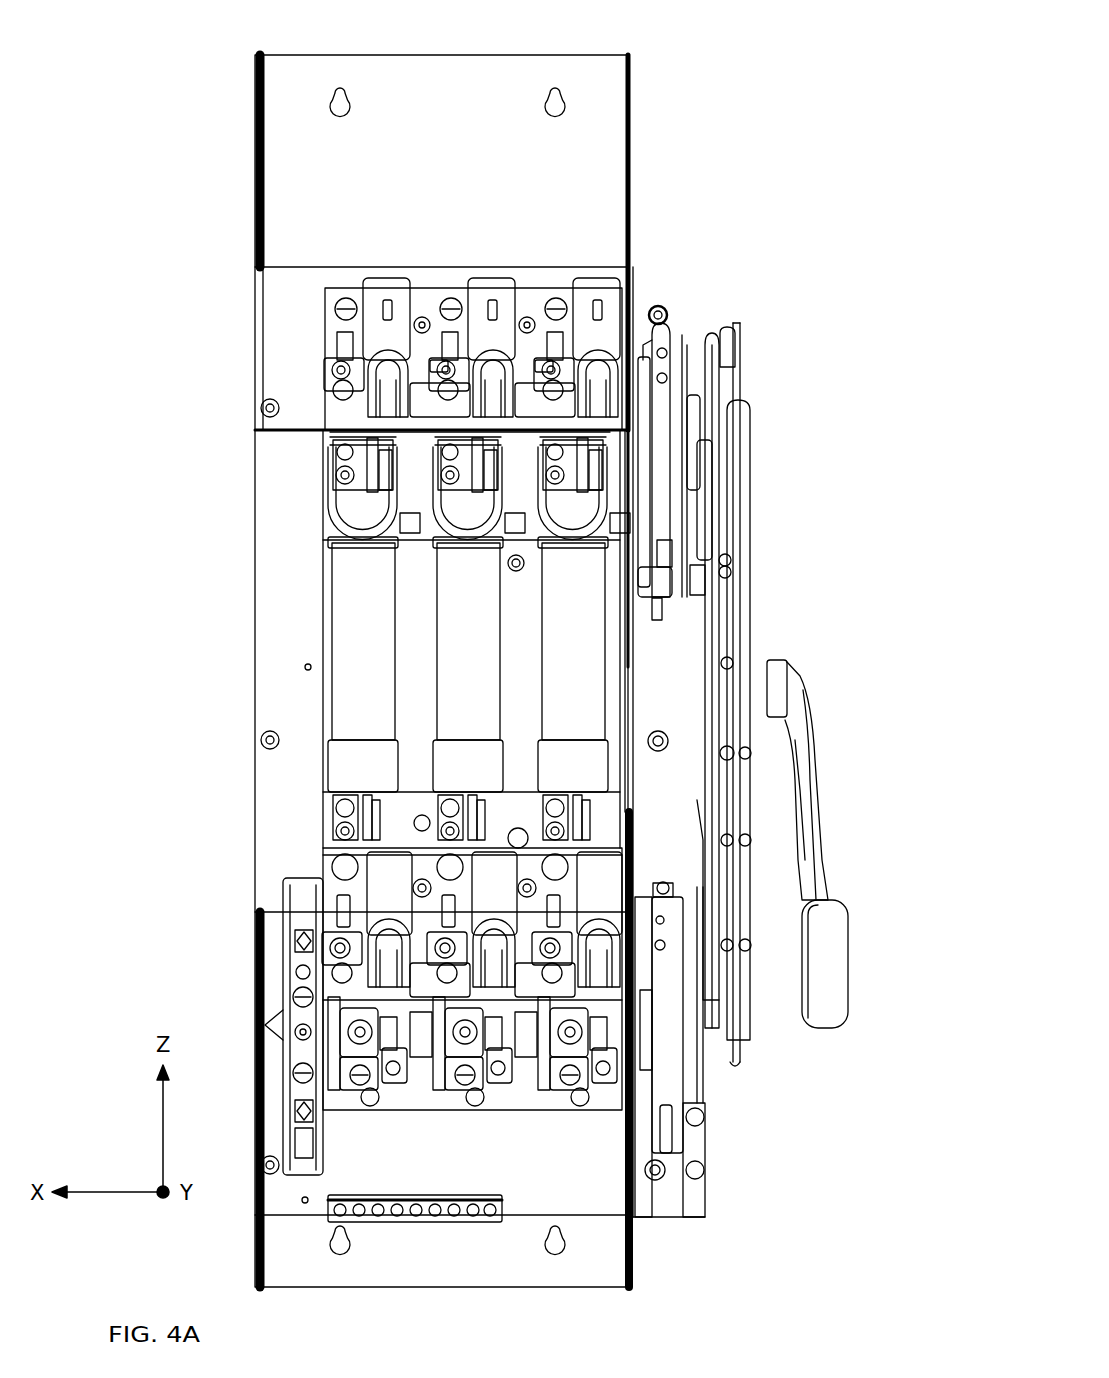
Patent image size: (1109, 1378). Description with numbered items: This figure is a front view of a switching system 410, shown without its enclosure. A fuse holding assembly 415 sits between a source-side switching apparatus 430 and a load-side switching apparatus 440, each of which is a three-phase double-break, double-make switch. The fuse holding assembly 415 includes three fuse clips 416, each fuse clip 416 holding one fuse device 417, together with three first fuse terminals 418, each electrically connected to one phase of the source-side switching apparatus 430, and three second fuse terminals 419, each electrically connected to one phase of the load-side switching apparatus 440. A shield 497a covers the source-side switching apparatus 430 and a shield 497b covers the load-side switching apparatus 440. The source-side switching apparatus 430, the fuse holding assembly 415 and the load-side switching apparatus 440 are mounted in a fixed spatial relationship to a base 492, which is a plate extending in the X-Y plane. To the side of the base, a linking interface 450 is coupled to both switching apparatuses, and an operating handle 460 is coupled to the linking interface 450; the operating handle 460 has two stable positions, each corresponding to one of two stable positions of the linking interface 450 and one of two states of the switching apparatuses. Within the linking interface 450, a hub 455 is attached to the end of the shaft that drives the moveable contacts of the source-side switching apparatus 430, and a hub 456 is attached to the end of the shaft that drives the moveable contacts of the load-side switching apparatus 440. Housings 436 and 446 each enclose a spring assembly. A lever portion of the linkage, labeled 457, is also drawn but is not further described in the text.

The switching system 410 is at (90, 213).
The fuse holding assembly 415 is at (378, 646).
The fuse clip 416 is at (327, 487).
The fuse device 417 is at (347, 672).
The first fuse terminal 418 is at (335, 443).
The second fuse terminal 419 is at (345, 830).
The source-side switching apparatus 430 is at (367, 330).
The housing 436 is at (662, 333).
The load-side switching apparatus 440 is at (323, 958).
The housing 446 is at (665, 1153).
The linking interface 450 is at (788, 695).
The hub 455 is at (687, 400).
The hub 456 is at (690, 958).
The lever arm 457 is at (777, 670).
The operating handle 460 is at (833, 947).
The base 492 is at (652, 287).
The shield 497a is at (598, 165).
The shield 497b is at (598, 1240).